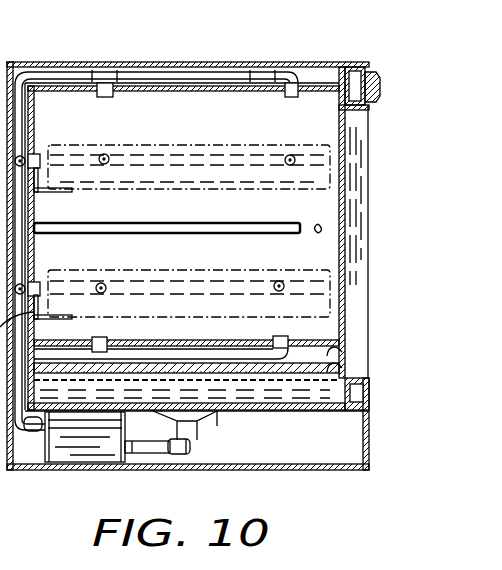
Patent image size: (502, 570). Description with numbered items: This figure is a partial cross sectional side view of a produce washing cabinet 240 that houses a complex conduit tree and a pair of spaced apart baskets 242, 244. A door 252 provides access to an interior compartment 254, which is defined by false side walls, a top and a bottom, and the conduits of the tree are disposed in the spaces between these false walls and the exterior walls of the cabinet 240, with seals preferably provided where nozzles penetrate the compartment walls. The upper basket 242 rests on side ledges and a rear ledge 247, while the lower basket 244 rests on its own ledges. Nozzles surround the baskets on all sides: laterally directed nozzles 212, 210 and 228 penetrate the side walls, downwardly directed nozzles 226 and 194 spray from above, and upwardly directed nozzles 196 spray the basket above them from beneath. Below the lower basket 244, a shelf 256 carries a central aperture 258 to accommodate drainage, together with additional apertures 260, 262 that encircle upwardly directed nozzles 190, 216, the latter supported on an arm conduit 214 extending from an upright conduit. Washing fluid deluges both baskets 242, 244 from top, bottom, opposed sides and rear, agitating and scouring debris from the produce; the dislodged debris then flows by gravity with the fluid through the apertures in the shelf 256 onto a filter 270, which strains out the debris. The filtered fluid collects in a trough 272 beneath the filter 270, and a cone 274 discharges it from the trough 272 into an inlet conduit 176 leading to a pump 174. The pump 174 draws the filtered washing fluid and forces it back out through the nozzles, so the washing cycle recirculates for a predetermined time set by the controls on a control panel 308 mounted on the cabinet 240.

The cabinet 240 is at (117, 56).
The control panel 308 is at (372, 67).
The interior compartment 254 is at (345, 219).
The door 252 is at (348, 262).
The nozzles 226 is at (105, 98).
The basket 242 is at (190, 146).
The nozzles 212 is at (104, 154).
The nozzles 228 is at (40, 153).
The rear ledge 247 is at (60, 192).
The upwardly directed nozzles 190 is at (106, 222).
The upwardly directed nozzles 196 is at (316, 227).
The basket 244 is at (175, 270).
The downwardly directed nozzles 194 is at (96, 238).
The nozzles 210 is at (105, 284).
The nozzles 216 is at (73, 316).
The arm conduit 214 is at (173, 354).
The central aperture 258 is at (190, 358).
The aperture 262 is at (107, 347).
The aperture 260 is at (283, 336).
The shelf 256 is at (345, 341).
The filter 270 is at (345, 366).
The trough 272 is at (299, 418).
The pump 174 is at (73, 456).
The inlet conduit 176 is at (195, 447).
The cone 274 is at (205, 415).